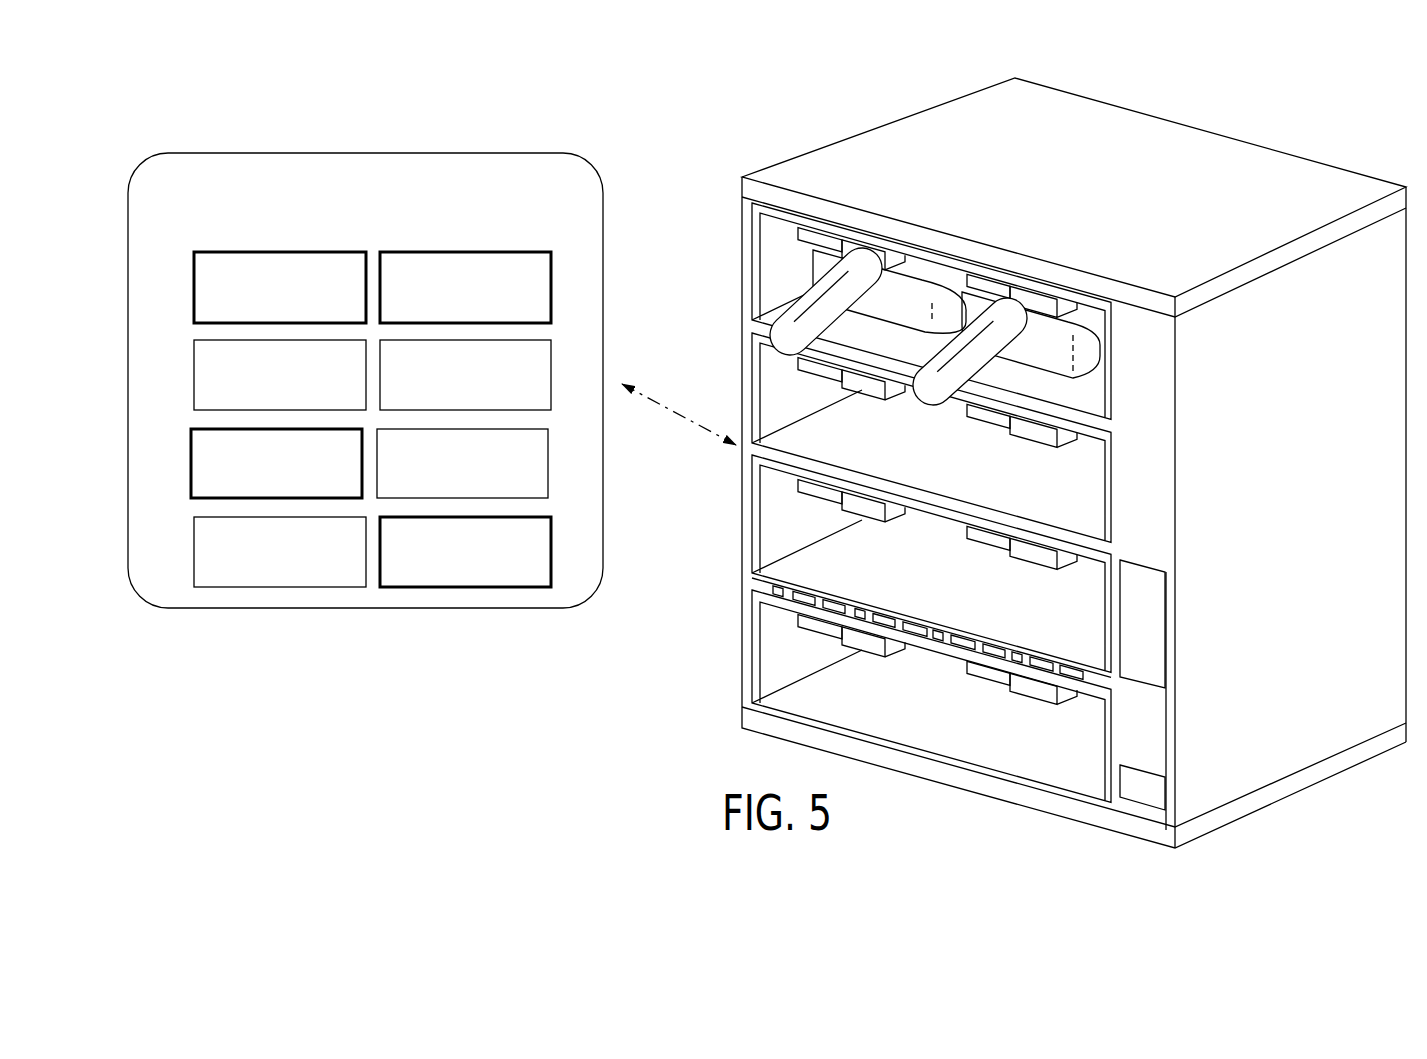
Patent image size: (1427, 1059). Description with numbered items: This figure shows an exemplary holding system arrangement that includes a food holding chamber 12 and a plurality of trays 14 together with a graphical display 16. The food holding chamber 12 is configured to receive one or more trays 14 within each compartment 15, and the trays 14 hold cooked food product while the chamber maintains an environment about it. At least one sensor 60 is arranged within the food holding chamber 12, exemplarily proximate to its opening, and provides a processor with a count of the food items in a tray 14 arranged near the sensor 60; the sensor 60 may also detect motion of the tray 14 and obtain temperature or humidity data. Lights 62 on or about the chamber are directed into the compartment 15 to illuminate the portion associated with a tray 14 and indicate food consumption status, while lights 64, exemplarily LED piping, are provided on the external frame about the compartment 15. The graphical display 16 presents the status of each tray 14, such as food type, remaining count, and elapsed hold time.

The food holding chamber 12 is at (1137, 138).
The tray 14 is at (800, 302).
The compartment 15 is at (1117, 366).
The graphical display 16 is at (366, 608).
The sensor 60 is at (817, 240).
The lights 62 is at (877, 252).
The lights 64 is at (773, 215).